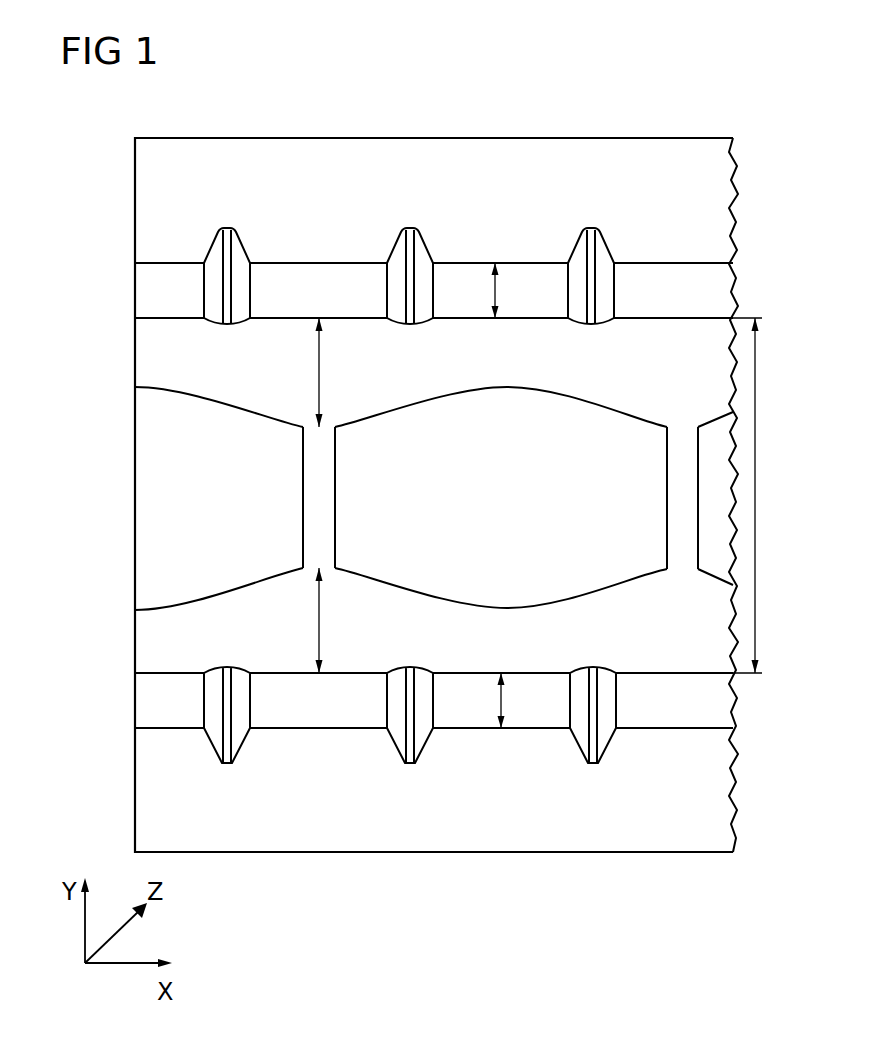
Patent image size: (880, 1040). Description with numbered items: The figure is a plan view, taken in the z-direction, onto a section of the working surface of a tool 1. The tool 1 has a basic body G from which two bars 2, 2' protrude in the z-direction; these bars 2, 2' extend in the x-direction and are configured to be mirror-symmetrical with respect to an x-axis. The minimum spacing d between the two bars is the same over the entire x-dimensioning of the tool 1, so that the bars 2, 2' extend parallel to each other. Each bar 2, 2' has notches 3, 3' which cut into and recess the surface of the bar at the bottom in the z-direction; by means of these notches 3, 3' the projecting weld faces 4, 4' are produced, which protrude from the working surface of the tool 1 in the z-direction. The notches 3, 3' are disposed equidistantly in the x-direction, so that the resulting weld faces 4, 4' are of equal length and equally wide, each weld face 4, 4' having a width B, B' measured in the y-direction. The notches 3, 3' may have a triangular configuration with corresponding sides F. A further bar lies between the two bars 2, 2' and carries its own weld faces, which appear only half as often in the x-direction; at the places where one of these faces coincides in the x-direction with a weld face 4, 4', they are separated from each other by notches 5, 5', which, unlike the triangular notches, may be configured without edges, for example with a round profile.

The tool 1 is at (110, 197).
The bar 2 is at (434, 286).
The bar 2' is at (434, 739).
The notch 3 is at (227, 305).
The notch 3' is at (410, 719).
The weld face 4 is at (434, 321).
The weld face 4' is at (434, 731).
The notch 5 is at (342, 372).
The notch 5' is at (293, 620).
The width B is at (521, 290).
The width B' is at (531, 700).
The minimum spacing d is at (758, 488).
The side F is at (605, 263).
The basic body G is at (718, 188).